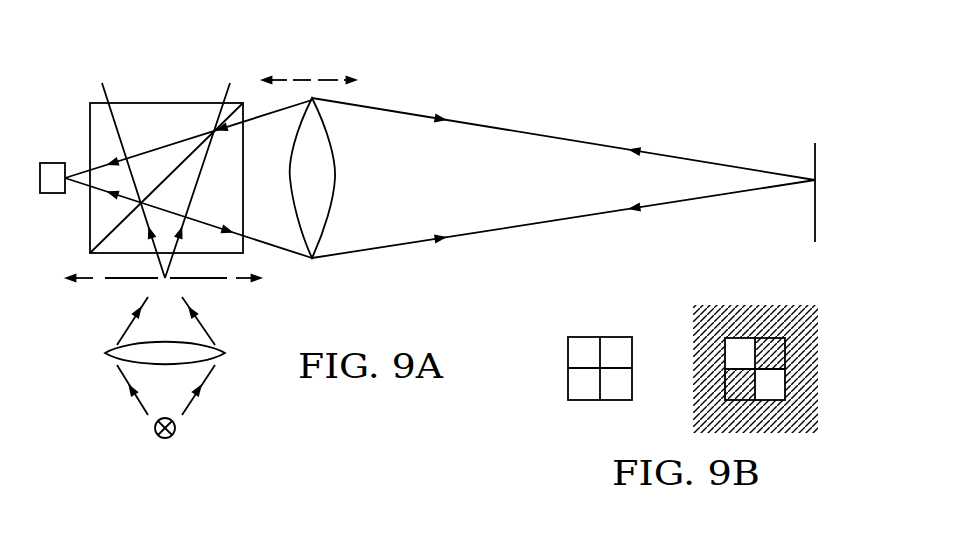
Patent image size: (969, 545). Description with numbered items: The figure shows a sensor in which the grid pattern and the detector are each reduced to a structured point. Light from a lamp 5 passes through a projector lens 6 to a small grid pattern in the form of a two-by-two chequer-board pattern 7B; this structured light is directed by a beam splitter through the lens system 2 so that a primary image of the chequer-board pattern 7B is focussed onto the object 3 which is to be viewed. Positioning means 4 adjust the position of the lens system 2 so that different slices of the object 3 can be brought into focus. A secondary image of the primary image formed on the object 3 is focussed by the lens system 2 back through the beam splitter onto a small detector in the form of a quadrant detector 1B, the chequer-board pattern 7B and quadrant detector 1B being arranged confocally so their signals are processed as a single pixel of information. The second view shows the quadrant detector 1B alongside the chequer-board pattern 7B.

In FIG. 9A, the quadrant detector 1B is at (62, 163).
In FIG. 9B, the quadrant detector 1B is at (615, 337).
In FIG. 9A, the lens system 2 is at (315, 248).
In FIG. 9A, the object 3 is at (847, 187).
In FIG. 9A, the positioning means 4 is at (320, 80).
In FIG. 9A, the lamp 5 is at (154, 426).
In FIG. 9A, the projector lens 6 is at (112, 352).
In FIG. 9A, the two-by-two chequer-board pattern 7B is at (117, 282).
In FIG. 9B, the two-by-two chequer-board pattern 7B is at (780, 388).